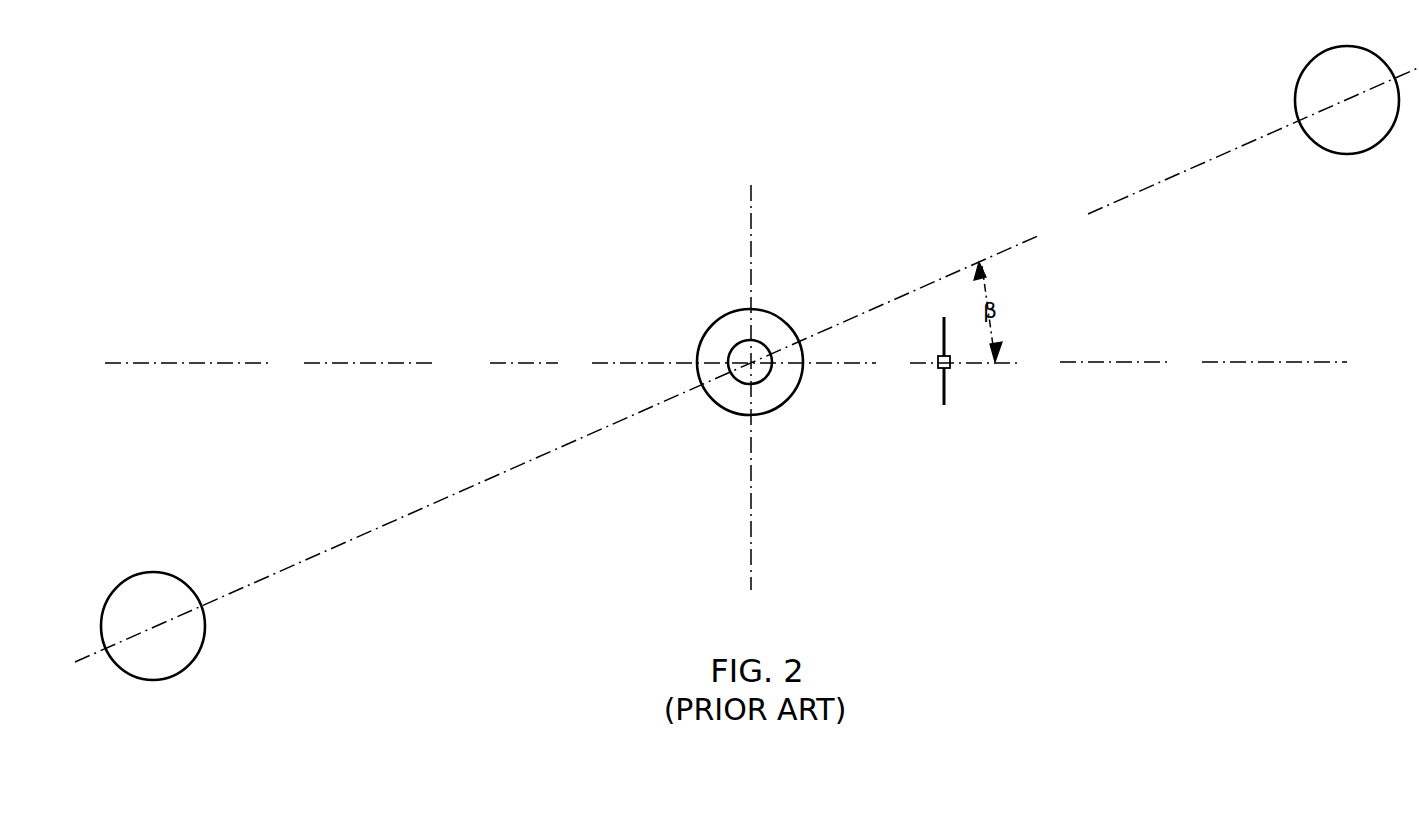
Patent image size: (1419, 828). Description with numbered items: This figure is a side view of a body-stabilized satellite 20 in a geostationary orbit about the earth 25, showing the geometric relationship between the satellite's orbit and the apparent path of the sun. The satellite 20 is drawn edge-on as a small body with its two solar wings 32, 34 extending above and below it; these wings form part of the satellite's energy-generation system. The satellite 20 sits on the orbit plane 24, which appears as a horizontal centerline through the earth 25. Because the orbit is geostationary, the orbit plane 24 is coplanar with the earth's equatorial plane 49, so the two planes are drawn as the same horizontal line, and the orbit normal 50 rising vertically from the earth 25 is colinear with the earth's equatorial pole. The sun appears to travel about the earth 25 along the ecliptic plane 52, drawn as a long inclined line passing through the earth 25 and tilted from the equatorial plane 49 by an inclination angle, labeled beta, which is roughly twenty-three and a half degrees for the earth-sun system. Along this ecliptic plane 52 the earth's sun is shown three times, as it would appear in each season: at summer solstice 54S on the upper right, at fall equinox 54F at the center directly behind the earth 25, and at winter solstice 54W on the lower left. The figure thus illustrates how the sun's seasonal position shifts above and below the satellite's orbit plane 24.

The body-stabilized satellite 20 is at (955, 372).
The orbit plane 24 is at (753, 363).
The earth 25 is at (768, 375).
The solar wing 32 is at (942, 340).
The solar wing 34 is at (942, 384).
The equatorial plane 49 is at (726, 363).
The orbit normal 50 is at (690, 387).
The ecliptic plane 52 is at (746, 365).
The sun at fall equinox 54F is at (716, 328).
The sun at summer solstice 54S is at (1296, 82).
The sun at winter solstice 54W is at (206, 618).